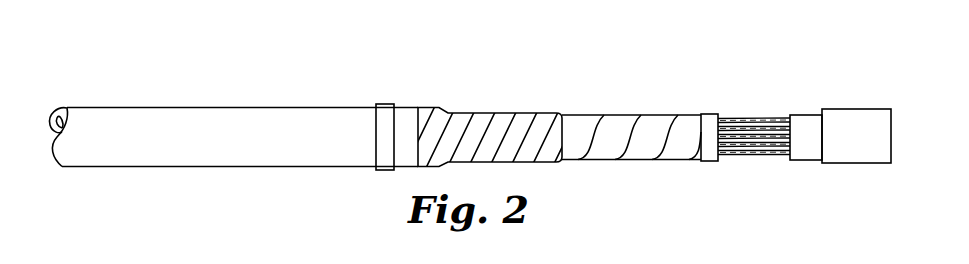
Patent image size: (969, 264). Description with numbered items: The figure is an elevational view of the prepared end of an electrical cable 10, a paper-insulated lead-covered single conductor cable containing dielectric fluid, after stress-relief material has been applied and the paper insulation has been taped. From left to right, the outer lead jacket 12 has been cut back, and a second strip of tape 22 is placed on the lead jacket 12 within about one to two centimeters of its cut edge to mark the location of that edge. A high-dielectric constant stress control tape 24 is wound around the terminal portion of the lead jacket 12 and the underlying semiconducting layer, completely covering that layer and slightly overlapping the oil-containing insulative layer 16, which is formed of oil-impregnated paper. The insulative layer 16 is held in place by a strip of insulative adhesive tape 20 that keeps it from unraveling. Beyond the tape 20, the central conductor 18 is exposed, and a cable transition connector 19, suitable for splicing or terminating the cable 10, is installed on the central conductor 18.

The electrical cable 10 is at (178, 72).
The outer lead jacket 12 is at (301, 122).
The second strip of tape 22 is at (386, 118).
The high-dielectric constant tape 24 is at (488, 122).
The oil-containing insulative layer 16 is at (612, 128).
The strip of insulative adhesive tape 20 is at (712, 122).
The central conductor 18 is at (753, 128).
The cable transition connector 19 is at (855, 122).